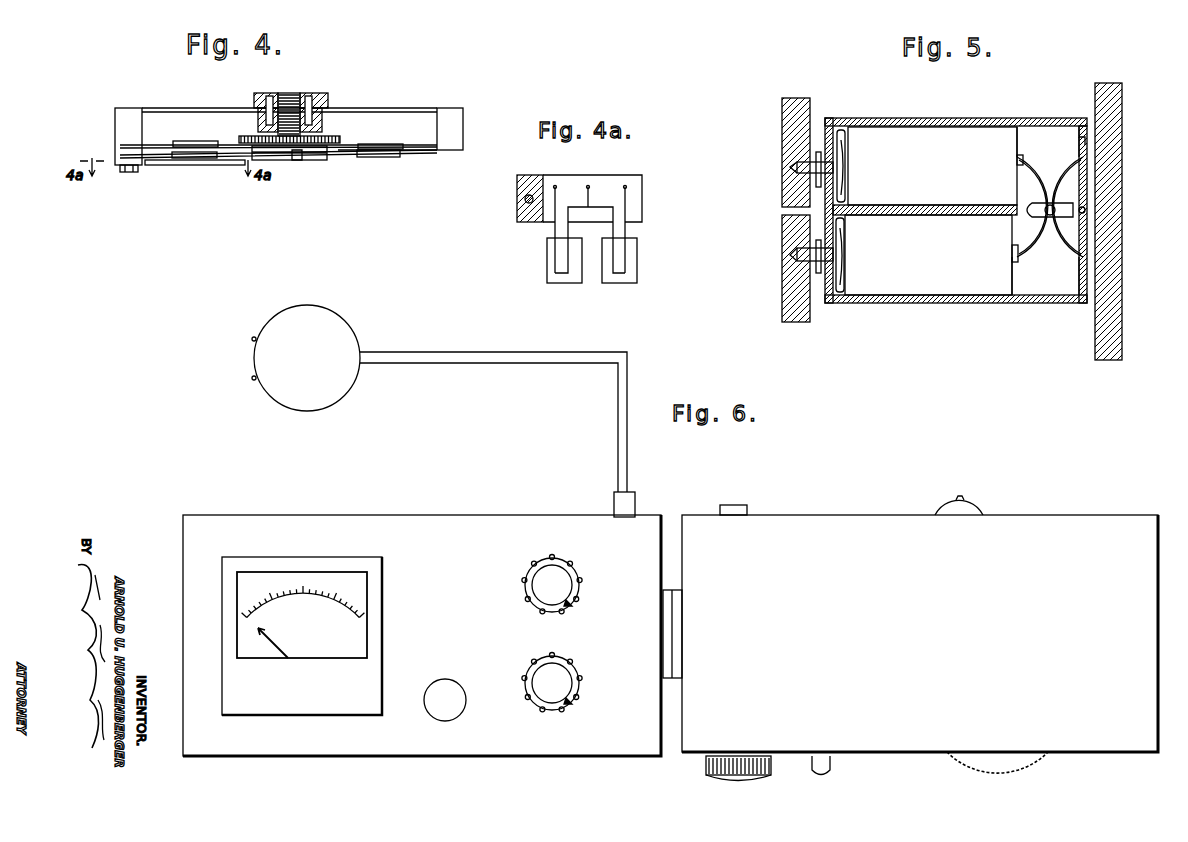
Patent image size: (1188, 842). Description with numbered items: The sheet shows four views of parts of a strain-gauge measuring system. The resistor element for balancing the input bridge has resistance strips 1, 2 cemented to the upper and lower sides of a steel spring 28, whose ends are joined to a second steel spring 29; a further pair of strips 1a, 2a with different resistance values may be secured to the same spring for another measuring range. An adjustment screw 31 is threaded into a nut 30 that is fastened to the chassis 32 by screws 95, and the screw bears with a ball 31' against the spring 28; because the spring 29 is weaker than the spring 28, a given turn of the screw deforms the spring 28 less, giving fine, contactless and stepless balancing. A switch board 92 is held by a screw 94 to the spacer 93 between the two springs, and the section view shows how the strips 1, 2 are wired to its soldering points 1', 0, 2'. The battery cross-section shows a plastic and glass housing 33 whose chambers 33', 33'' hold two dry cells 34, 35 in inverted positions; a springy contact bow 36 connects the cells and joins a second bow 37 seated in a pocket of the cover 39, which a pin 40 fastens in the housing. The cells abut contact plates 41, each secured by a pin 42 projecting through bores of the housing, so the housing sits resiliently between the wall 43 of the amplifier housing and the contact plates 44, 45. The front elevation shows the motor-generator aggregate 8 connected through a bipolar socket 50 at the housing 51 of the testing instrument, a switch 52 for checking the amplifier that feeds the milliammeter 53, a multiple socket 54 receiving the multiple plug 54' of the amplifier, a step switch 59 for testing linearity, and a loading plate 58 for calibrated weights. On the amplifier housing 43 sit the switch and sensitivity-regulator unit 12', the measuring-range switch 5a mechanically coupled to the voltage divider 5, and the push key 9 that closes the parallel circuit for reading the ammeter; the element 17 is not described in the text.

In FIG. 4, the resistance strip 1 is at (195, 130).
In FIG. 4A, the resistance strip 1 is at (551, 252).
In FIG. 4, the resistance strip 2 is at (194, 178).
In FIG. 4A, the resistance strip 2 is at (630, 252).
In FIG. 4, the resistance strip 1a is at (383, 144).
In FIG. 4, the resistance strip 2a is at (375, 158).
In FIG. 4A, the output contact 1' is at (564, 210).
In FIG. 4A, the output contact 2' is at (640, 210).
In FIG. 4A, the output contact 0 is at (592, 185).
In FIG. 4, the steel spring 28 is at (420, 158).
In FIG. 4, the steel spring 29 is at (420, 108).
In FIG. 4, the nut 30 is at (258, 125).
In FIG. 4, the adjustment screw 31 is at (301, 130).
In FIG. 6, the adjustment screw 31 is at (997, 779).
In FIG. 4, the ball 31' is at (303, 170).
In FIG. 4, the chassis 32 is at (325, 97).
In FIG. 4, the switch board 92 is at (178, 166).
In FIG. 4A, the switch board 92 is at (643, 190).
In FIG. 4, the spacer 93 is at (120, 113).
In FIG. 4A, the spacer 93 is at (528, 175).
In FIG. 4, the screw 94 is at (130, 173).
In FIG. 4A, the screw 94 is at (520, 203).
In FIG. 4, the screws 95 is at (308, 96).
In FIG. 5, the housing 33 is at (956, 198).
In FIG. 5, the chamber 33' is at (1048, 121).
In FIG. 5, the chamber 33'' is at (1045, 298).
In FIG. 5, the dry cell 34 is at (935, 174).
In FIG. 5, the dry cell 35 is at (925, 261).
In FIG. 5, the springy contact bow 36 is at (1039, 185).
In FIG. 5, the contact bow 37 is at (1058, 250).
In FIG. 5, the cover 39 is at (1085, 127).
In FIG. 5, the pin 40 is at (1085, 210).
In FIG. 5, the contact plate 41 is at (843, 130).
In FIG. 5, the pin 42 is at (800, 167).
In FIG. 5, the wall of amplifier housing 43 is at (1110, 262).
In FIG. 6, the wall of amplifier housing 43 is at (842, 515).
In FIG. 5, the contact plate 44 is at (790, 98).
In FIG. 5, the contact plate 45 is at (782, 300).
In FIG. 6, the motor-generator aggregate 8 is at (338, 327).
In FIG. 6, the bipolar socket 50 is at (636, 504).
In FIG. 6, the housing 51 is at (510, 515).
In FIG. 6, the switch 52 is at (546, 580).
In FIG. 6, the milliammeter 53 is at (350, 557).
In FIG. 6, the multiple socket 54 is at (650, 625).
In FIG. 6, the multiple plug 54' is at (698, 634).
In FIG. 6, the loading plate 58 is at (440, 710).
In FIG. 6, the step switch 59 is at (569, 677).
In FIG. 6, the push button 17 is at (745, 506).
In FIG. 6, the switch and sensitivity-regulator unit 12' is at (976, 492).
In FIG. 6, the push key 9 is at (830, 768).
In FIG. 6, the voltage divider 5 is at (756, 779).
In FIG. 6, the measuring-range switch 5a is at (760, 783).